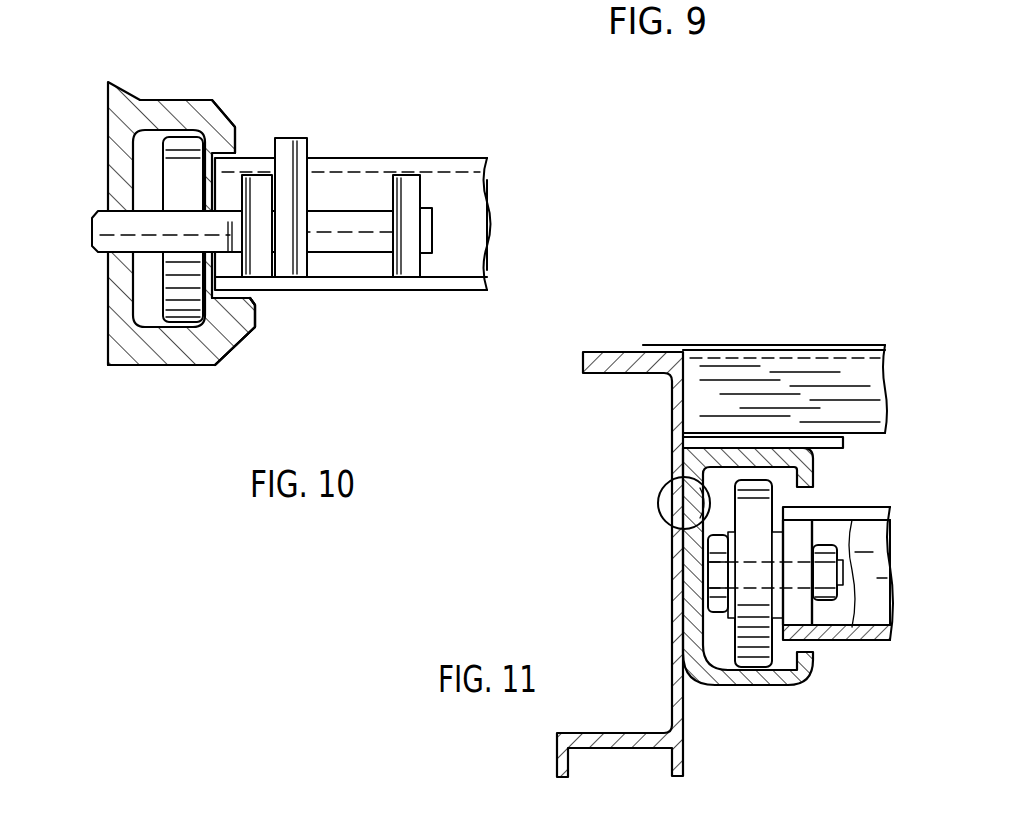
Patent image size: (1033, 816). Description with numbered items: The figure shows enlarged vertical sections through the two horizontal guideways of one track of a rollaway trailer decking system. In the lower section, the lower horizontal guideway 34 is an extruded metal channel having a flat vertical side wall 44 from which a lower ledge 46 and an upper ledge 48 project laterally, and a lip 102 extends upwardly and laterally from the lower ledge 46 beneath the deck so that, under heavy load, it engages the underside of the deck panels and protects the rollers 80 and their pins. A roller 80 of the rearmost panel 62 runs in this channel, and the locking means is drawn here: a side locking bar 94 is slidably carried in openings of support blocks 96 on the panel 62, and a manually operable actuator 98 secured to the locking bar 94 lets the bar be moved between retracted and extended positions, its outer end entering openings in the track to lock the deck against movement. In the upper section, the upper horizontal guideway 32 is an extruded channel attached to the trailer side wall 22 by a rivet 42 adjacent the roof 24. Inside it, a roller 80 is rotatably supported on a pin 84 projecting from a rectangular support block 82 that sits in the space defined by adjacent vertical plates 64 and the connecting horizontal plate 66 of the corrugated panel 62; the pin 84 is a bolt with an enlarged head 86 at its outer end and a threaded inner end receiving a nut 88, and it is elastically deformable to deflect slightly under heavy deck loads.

In FIG. 11, the side wall 22 is at (673, 602).
In FIG. 11, the roof 24 is at (810, 372).
In FIG. 11, the upper horizontal guideway 32 is at (788, 688).
In FIG. 10, the lower horizontal guideway 34 is at (98, 108).
In FIG. 11, the rivet 42 is at (658, 505).
In FIG. 10, the side wall 44 is at (116, 178).
In FIG. 10, the lower ledge 46 is at (183, 358).
In FIG. 10, the upper ledge 48 is at (196, 114).
In FIG. 10, the panel 62 is at (388, 150).
In FIG. 11, the panel 62 is at (862, 648).
In FIG. 10, the vertical plate 64 is at (475, 230).
In FIG. 11, the vertical plate 64 is at (877, 590).
In FIG. 10, the horizontal plate 66 is at (457, 173).
In FIG. 11, the horizontal plate 66 is at (872, 512).
In FIG. 10, the roller 80 is at (172, 288).
In FIG. 11, the roller 80 is at (750, 660).
In FIG. 11, the support block 82 is at (810, 532).
In FIG. 11, the pin 84 is at (847, 572).
In FIG. 11, the enlarged head 86 is at (708, 576).
In FIG. 11, the nut 88 is at (838, 553).
In FIG. 10, the side locking bar 94 is at (92, 232).
In FIG. 10, the support block 96 is at (260, 263).
In FIG. 10, the manually operable actuator 98 is at (291, 147).
In FIG. 10, the lip 102 is at (257, 329).